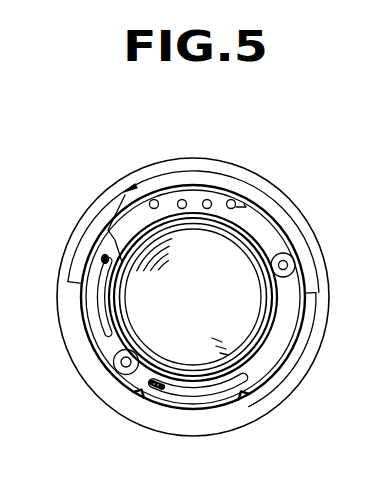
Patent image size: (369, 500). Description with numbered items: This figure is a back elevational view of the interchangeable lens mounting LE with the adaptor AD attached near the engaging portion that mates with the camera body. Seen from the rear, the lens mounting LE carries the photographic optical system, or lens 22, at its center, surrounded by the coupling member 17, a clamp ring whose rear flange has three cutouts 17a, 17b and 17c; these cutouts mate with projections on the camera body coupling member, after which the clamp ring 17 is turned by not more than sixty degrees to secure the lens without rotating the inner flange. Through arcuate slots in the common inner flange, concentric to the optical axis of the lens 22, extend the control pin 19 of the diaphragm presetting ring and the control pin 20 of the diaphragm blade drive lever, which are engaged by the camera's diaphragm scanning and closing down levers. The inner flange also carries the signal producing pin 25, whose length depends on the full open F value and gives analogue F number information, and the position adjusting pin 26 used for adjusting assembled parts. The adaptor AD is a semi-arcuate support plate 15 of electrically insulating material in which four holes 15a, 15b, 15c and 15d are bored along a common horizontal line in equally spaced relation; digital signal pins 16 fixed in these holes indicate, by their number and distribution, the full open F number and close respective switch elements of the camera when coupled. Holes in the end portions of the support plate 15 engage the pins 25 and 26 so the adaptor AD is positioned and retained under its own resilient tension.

The semi-arcuate support plate 15 is at (235, 200).
The hole 15a is at (264, 197).
The hole 15b is at (208, 199).
The hole 15c is at (182, 199).
The hole 15d is at (152, 199).
The digital signal pin 16 is at (242, 196).
The coupling member (clamp ring) 17 is at (314, 243).
The cutout 17a is at (123, 193).
The cutout 17b is at (76, 328).
The cutout 17c is at (291, 365).
The control pin 19 is at (103, 261).
The control pin 20 is at (162, 388).
The lens (photographic optical system) 22 is at (232, 336).
The signal producing pin 25 is at (127, 364).
The position adjusting pin 26 is at (288, 266).
The adaptor AD is at (103, 233).
The lens mounting LE is at (104, 162).